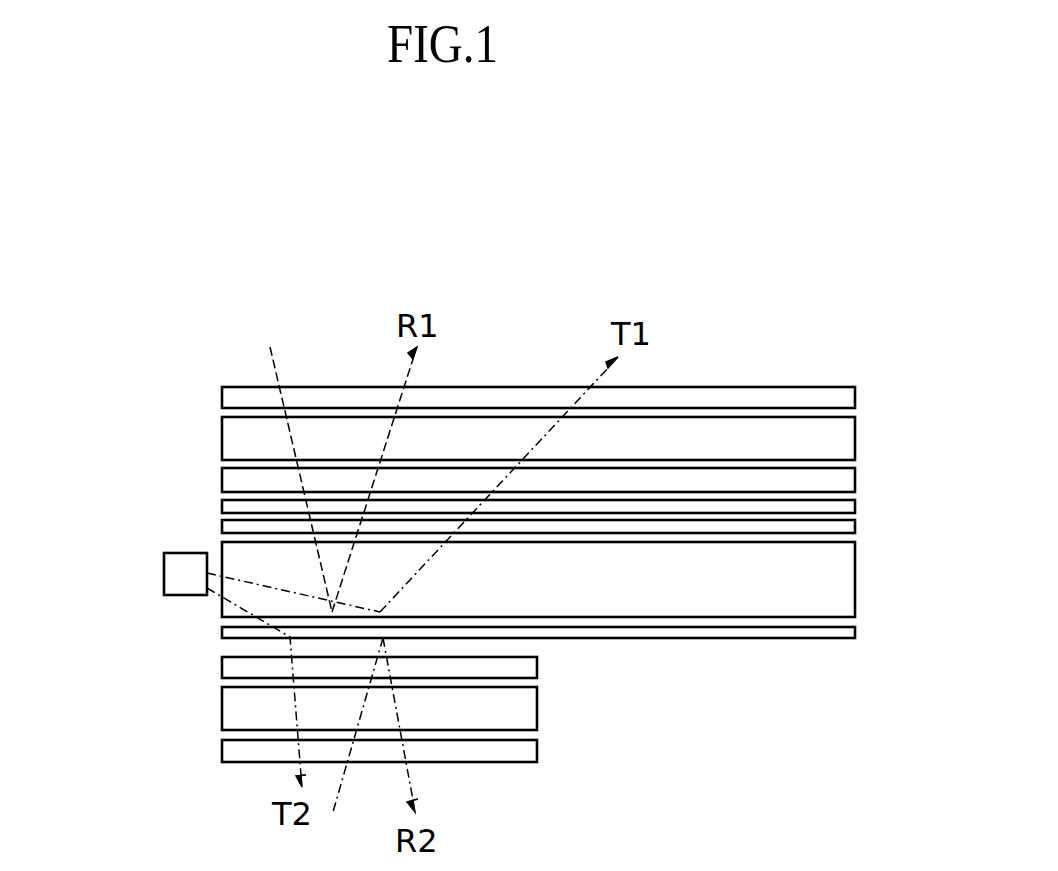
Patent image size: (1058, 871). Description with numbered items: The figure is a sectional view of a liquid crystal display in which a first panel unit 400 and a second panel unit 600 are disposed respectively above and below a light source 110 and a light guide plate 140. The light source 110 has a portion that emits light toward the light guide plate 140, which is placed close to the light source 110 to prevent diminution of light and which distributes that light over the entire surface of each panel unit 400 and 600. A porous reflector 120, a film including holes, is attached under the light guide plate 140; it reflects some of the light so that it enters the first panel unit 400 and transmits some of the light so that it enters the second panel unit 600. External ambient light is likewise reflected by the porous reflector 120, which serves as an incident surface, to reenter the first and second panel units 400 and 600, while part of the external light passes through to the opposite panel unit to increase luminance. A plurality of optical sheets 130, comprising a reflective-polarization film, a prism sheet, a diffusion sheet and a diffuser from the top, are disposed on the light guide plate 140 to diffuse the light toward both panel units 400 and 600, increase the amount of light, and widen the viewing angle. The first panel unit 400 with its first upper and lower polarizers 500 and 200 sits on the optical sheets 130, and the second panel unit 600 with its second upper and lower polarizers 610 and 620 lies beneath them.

The light source 110 is at (170, 588).
The porous reflector 120 is at (846, 633).
The optical sheets 130 is at (868, 501).
The light guide plate 140 is at (846, 580).
The first lower polarizer 200 is at (846, 482).
The first panel unit 400 is at (846, 440).
The first upper polarizer 500 is at (846, 398).
The second panel unit 600 is at (530, 710).
The second upper polarizer 610 is at (530, 668).
The second lower polarizer 620 is at (530, 753).